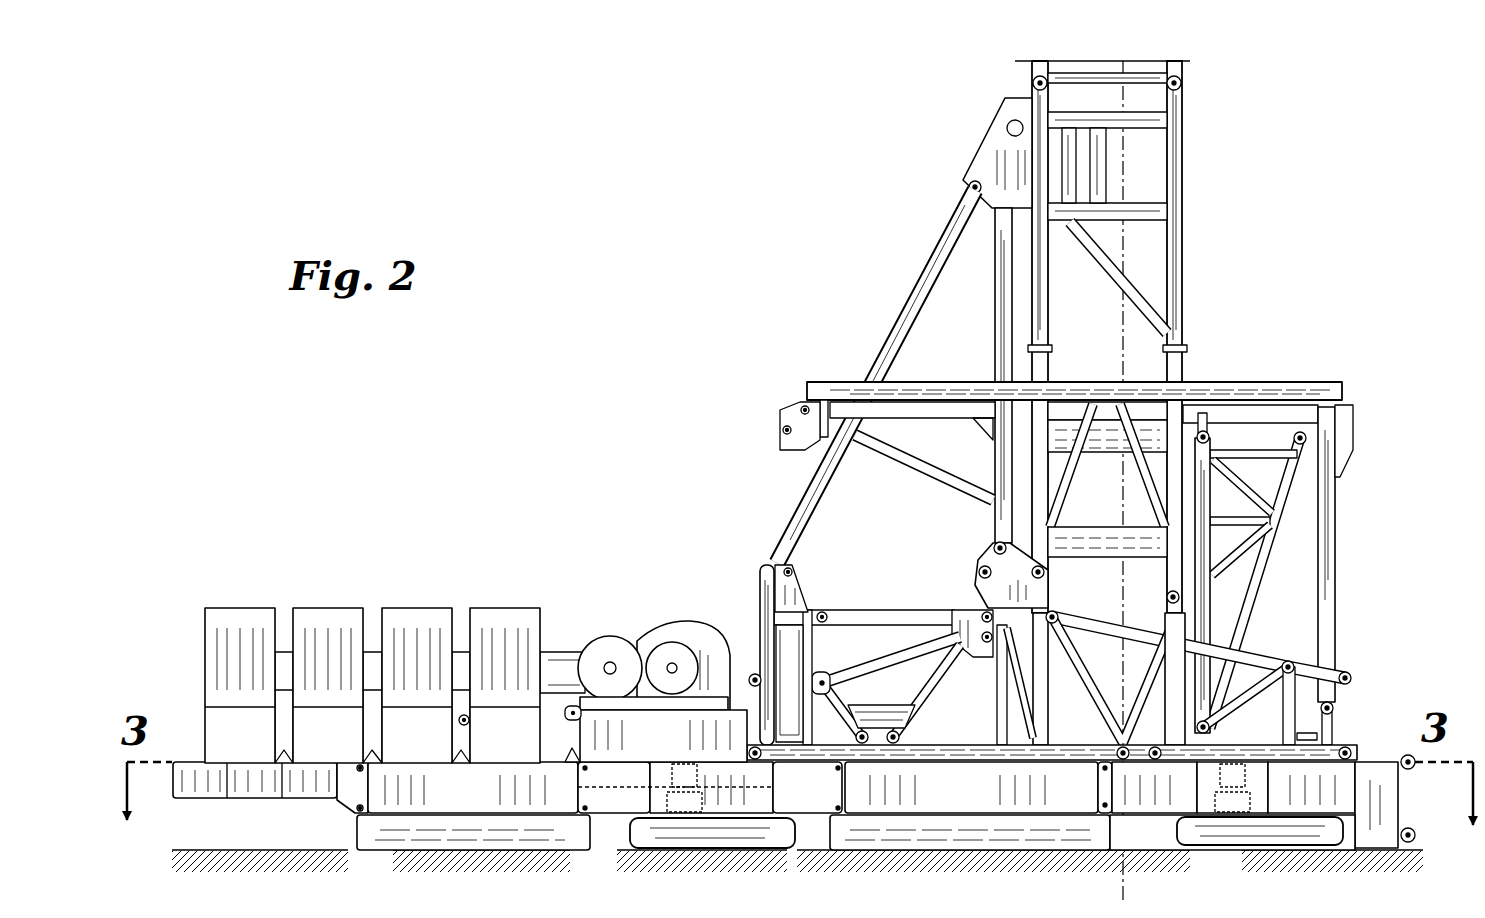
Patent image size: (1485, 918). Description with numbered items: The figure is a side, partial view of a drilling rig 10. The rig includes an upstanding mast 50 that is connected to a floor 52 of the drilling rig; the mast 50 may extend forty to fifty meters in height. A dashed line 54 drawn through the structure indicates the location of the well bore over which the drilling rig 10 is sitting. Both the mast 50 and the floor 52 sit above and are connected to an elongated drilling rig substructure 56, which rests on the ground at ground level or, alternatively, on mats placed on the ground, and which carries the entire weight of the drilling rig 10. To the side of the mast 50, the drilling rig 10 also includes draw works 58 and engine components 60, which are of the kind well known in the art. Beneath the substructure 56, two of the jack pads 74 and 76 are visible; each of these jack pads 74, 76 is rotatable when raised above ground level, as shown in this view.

The drilling rig 10 is at (1240, 343).
The mast 50 is at (1180, 262).
The floor 52 is at (1278, 385).
The dashed line 54 is at (1125, 147).
The drilling rig substructure 56 is at (432, 793).
The draw works 58 is at (657, 633).
The engine components 60 is at (242, 632).
The jack pad 74 is at (690, 835).
The jack pad 76 is at (1232, 835).